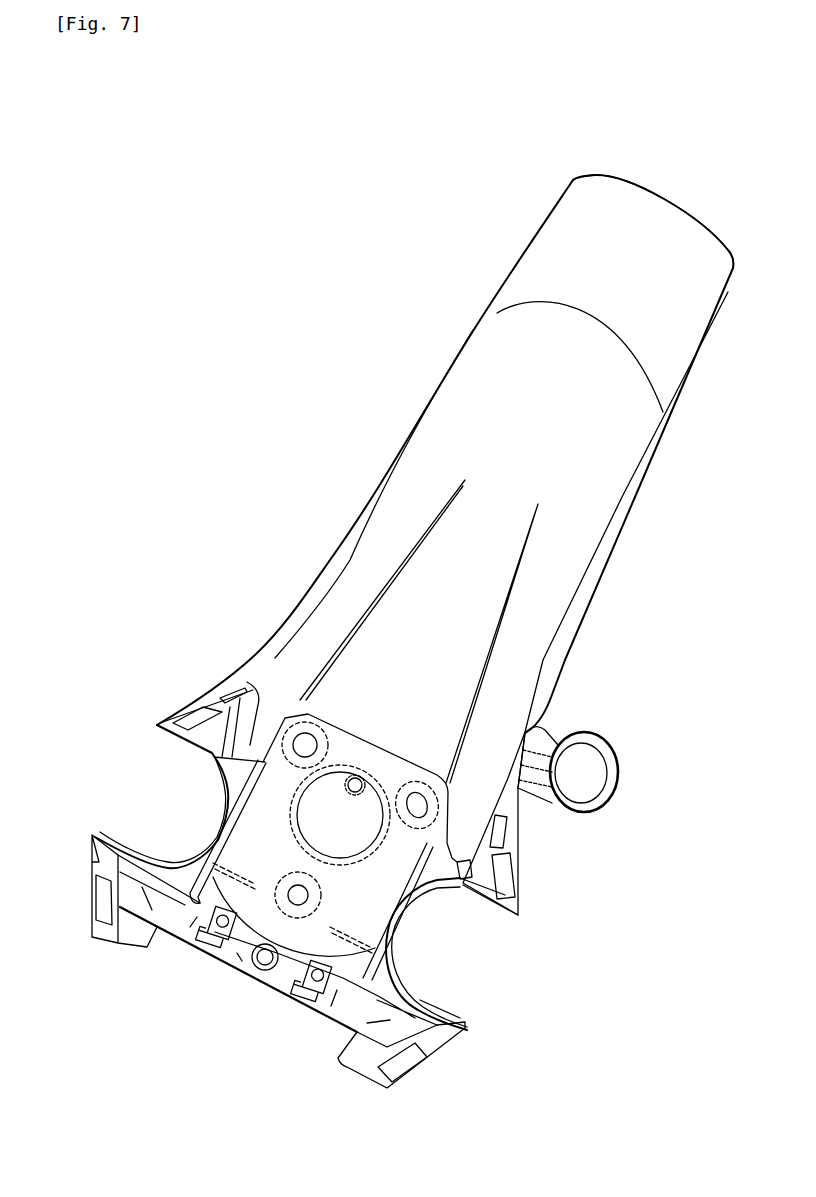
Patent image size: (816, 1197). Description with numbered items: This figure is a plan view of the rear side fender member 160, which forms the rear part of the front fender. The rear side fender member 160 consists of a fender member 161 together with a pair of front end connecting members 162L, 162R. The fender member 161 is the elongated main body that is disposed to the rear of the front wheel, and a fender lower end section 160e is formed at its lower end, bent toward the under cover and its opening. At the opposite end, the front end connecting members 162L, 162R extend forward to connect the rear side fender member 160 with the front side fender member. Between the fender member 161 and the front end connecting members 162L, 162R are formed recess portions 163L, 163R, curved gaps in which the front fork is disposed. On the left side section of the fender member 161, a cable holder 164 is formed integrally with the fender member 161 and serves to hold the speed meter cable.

The rear side fender member 160 is at (667, 144).
The fender lower end section 160e is at (670, 222).
The fender member 161 is at (605, 475).
The front end connecting member 162R is at (130, 948).
The front end connecting member 162L is at (365, 1058).
The recess portion 163R is at (168, 800).
The recess portion 163L is at (452, 958).
The cable holder 164 is at (607, 788).